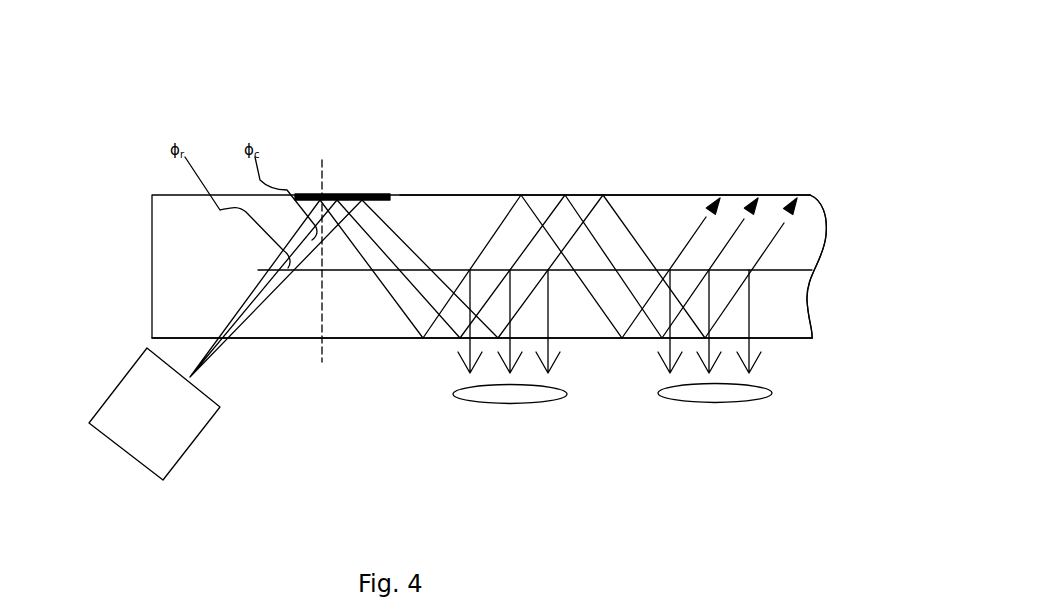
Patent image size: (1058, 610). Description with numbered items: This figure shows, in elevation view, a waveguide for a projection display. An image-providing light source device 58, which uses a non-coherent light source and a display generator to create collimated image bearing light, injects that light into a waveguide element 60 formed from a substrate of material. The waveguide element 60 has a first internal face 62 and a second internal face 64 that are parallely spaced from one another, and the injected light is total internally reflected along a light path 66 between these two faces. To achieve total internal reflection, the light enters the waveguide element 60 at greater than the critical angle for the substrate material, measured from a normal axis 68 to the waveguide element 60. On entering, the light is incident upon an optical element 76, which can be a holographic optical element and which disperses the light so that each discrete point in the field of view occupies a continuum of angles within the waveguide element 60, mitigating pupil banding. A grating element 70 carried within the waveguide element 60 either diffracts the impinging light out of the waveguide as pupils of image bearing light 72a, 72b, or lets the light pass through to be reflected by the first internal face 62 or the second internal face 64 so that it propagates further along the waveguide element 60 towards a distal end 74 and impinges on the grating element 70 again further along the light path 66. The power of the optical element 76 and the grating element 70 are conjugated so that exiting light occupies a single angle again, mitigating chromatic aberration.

The image-providing light source device 58 is at (135, 403).
The waveguide element 60 is at (835, 283).
The first internal face 62 is at (640, 196).
The second internal face 64 is at (287, 333).
The light path 66 is at (493, 230).
The normal axis 68 is at (325, 170).
The grating element 70 is at (352, 272).
The pupil of image bearing light 72a is at (525, 397).
The pupil of image bearing light 72b is at (725, 398).
The distal end 74 is at (822, 207).
The optical element 76 is at (360, 196).